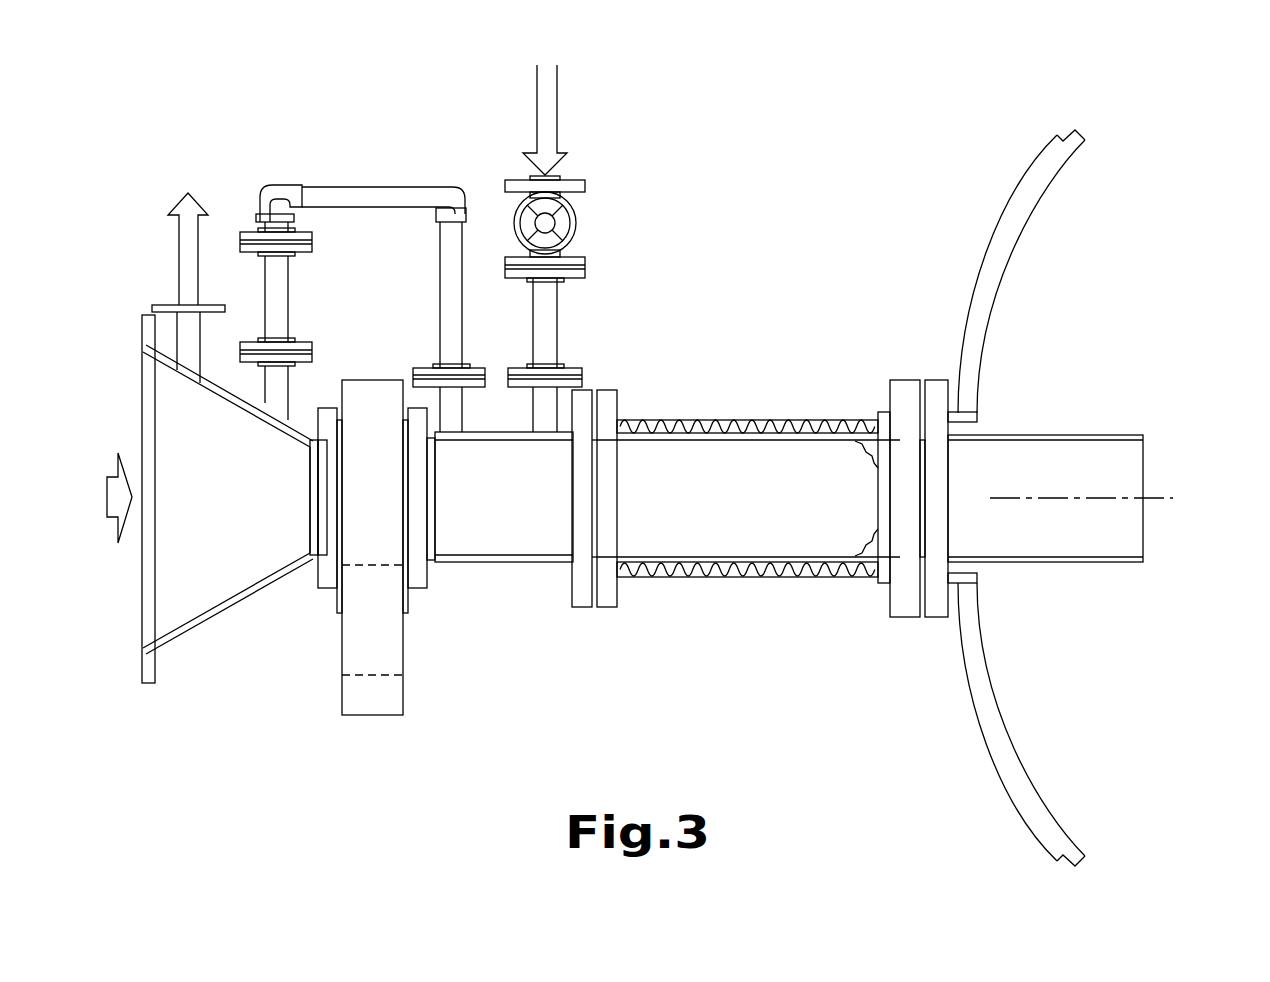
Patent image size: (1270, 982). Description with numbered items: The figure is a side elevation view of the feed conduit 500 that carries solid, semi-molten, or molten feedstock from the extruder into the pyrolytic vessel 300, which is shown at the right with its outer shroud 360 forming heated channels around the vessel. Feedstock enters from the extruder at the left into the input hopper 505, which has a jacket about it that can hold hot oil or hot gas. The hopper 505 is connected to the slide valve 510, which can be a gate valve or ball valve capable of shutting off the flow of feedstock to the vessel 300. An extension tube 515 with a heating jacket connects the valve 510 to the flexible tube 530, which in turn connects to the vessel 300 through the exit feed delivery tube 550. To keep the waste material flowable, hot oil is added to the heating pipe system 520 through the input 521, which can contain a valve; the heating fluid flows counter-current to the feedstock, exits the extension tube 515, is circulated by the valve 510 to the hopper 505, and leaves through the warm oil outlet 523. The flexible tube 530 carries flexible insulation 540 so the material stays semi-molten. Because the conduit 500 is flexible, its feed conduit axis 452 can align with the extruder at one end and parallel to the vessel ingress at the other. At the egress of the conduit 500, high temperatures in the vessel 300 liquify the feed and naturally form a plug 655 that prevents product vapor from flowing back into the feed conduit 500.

The vessel 300 is at (1023, 498).
The outer shroud 360 is at (990, 233).
The feed conduit axis 452 is at (1080, 498).
The feed conduit 500 is at (720, 197).
The input hopper 505 is at (233, 608).
The slide valve 510 is at (346, 474).
The extension tube 515 is at (505, 518).
The heating pipe system 520 is at (448, 148).
The input 521 is at (537, 113).
The warm oil outlet 523 is at (172, 243).
The flexible tube 530 is at (820, 420).
The flexible insulation 540 is at (692, 420).
The exit feed delivery tube 550 is at (1053, 435).
The plug 655 is at (863, 550).